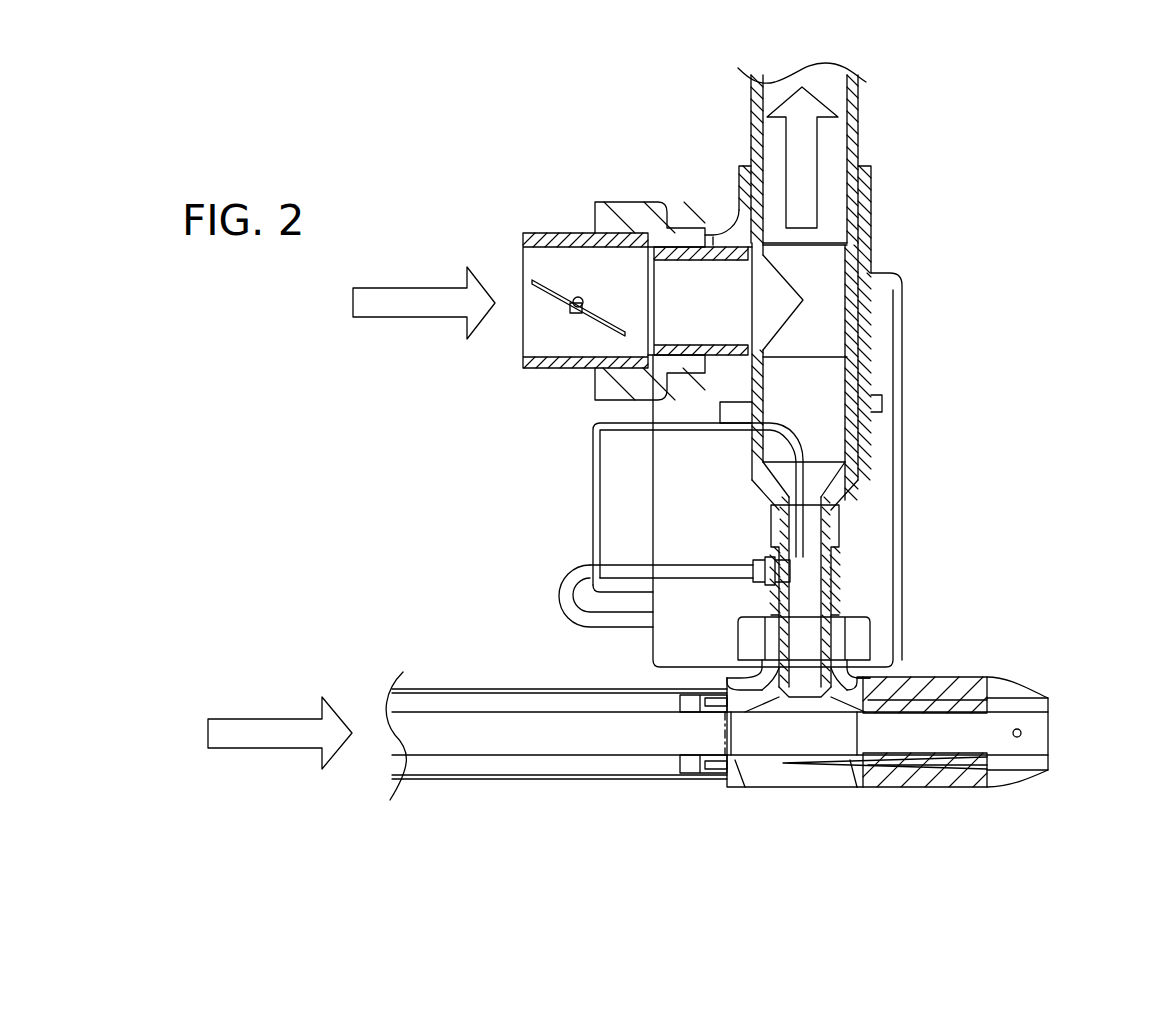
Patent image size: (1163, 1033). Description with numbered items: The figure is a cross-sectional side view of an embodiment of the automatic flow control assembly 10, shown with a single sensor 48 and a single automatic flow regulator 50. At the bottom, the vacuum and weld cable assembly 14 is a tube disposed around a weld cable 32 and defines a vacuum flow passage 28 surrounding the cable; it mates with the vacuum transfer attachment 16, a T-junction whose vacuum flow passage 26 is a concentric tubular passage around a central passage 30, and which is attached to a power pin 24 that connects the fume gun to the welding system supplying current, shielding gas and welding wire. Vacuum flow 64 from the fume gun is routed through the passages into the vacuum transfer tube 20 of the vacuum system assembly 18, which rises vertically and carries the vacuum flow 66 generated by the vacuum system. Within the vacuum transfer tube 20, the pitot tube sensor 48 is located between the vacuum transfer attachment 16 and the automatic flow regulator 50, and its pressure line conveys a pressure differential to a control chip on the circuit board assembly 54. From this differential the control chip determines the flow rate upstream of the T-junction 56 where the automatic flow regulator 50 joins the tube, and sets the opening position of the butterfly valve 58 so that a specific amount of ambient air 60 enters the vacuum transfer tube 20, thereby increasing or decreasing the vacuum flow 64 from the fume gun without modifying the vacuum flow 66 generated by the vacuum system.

The automatic flow control assembly 10 is at (1086, 126).
The vacuum and weld cable assembly 14 is at (502, 778).
The vacuum transfer attachment 16 is at (844, 803).
The vacuum system assembly 18 is at (682, 135).
The vacuum transfer tube 20 is at (858, 145).
The power pin 24 is at (985, 680).
The vacuum flow passage 26 is at (695, 693).
The vacuum flow passage 28 is at (597, 697).
The central passage 30 is at (757, 738).
The weld cable 32 is at (561, 740).
The sensor 48 is at (592, 488).
The automatic flow regulator 50 is at (514, 207).
The circuit board assembly 54 is at (895, 273).
The T-junction 56 is at (835, 295).
The butterfly valve 58 is at (590, 325).
The ambient air 60 is at (408, 317).
The vacuum flow 64 is at (262, 718).
The vacuum flow 66 is at (800, 153).